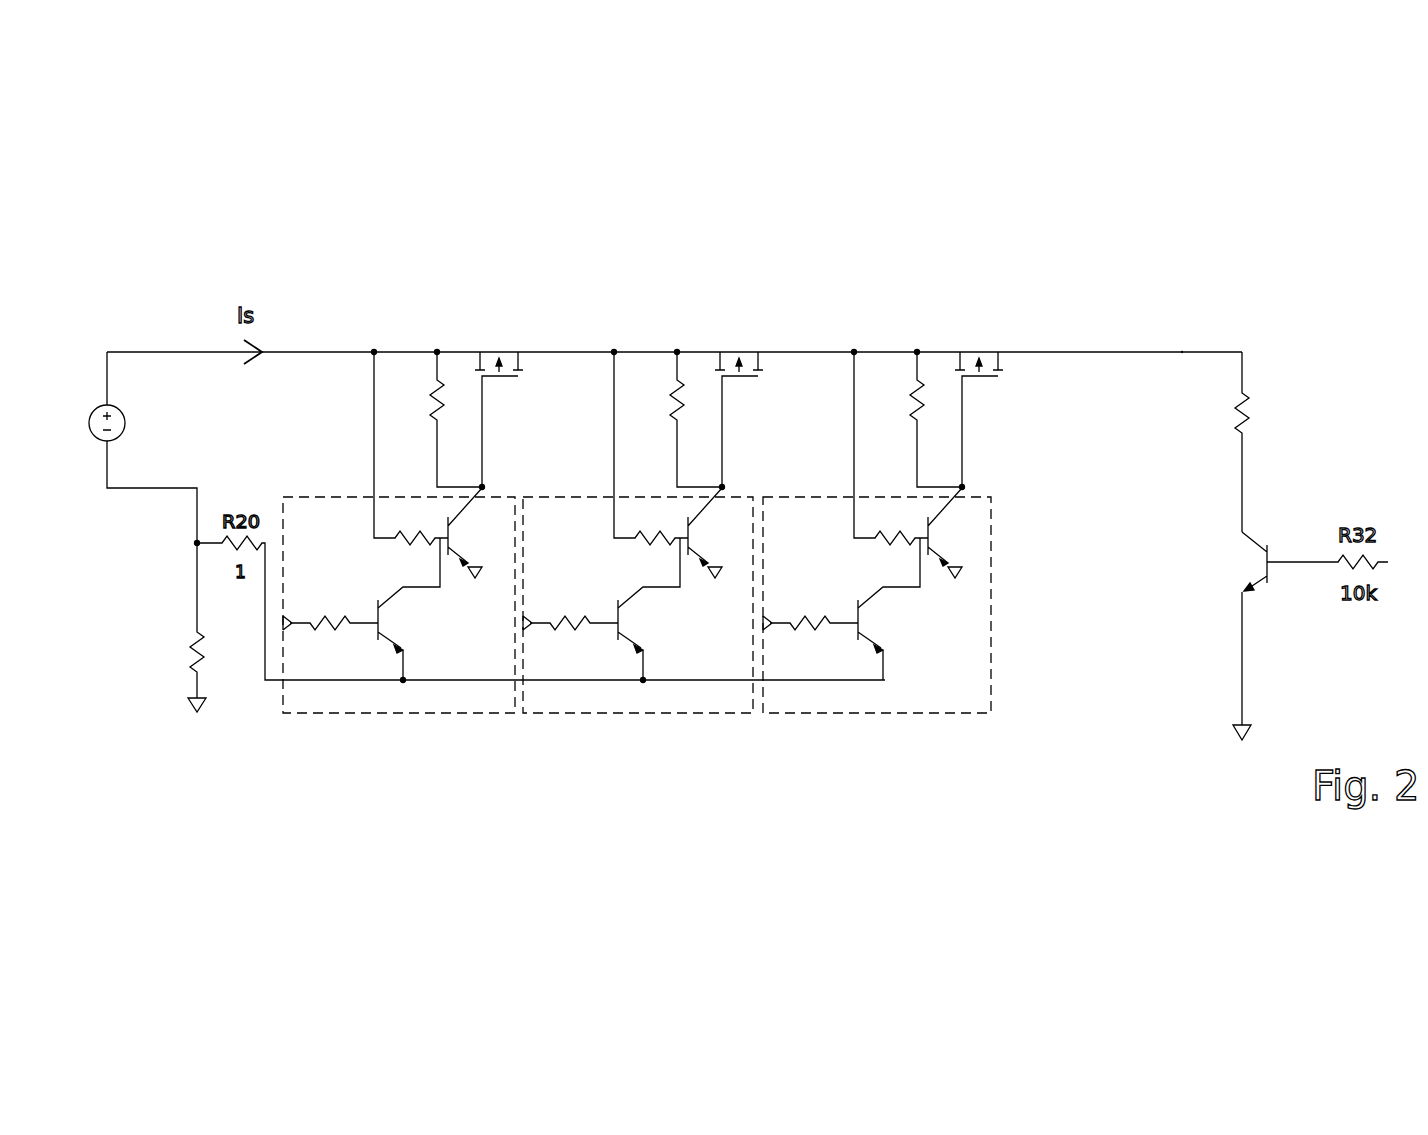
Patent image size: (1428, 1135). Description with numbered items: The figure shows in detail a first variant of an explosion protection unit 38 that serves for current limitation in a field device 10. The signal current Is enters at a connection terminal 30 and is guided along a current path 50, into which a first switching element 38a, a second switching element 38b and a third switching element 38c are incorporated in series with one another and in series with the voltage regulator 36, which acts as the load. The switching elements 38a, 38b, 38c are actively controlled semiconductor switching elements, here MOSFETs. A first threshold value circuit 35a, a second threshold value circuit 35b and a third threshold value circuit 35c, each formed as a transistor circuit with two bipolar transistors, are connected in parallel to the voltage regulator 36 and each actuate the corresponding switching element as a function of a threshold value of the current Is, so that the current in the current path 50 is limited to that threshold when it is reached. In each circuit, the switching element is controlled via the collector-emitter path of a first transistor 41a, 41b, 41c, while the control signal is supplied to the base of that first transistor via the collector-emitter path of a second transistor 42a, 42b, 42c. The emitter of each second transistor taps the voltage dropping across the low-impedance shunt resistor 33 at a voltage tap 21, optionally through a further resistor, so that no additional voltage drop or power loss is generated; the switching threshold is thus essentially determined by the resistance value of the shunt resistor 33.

The field device 10 is at (1259, 442).
The voltage tap 21 is at (200, 540).
The connection terminal 30 is at (143, 447).
The shunt resistor 33 is at (192, 632).
The first threshold value circuit 35a is at (409, 564).
The second threshold value circuit 35b is at (650, 564).
The third threshold value circuit 35c is at (889, 564).
The voltage regulator 36 is at (1258, 520).
The explosion protection unit 38 is at (1275, 252).
The first switching element 38a is at (518, 278).
The second switching element 38b is at (711, 340).
The third switching element 38c is at (950, 340).
The first transistor 41a is at (495, 494).
The first transistor 41b is at (732, 499).
The first transistor 41c is at (971, 499).
The second transistor 42a is at (428, 660).
The second transistor 42b is at (667, 688).
The second transistor 42c is at (907, 688).
The current path 50 is at (1180, 350).